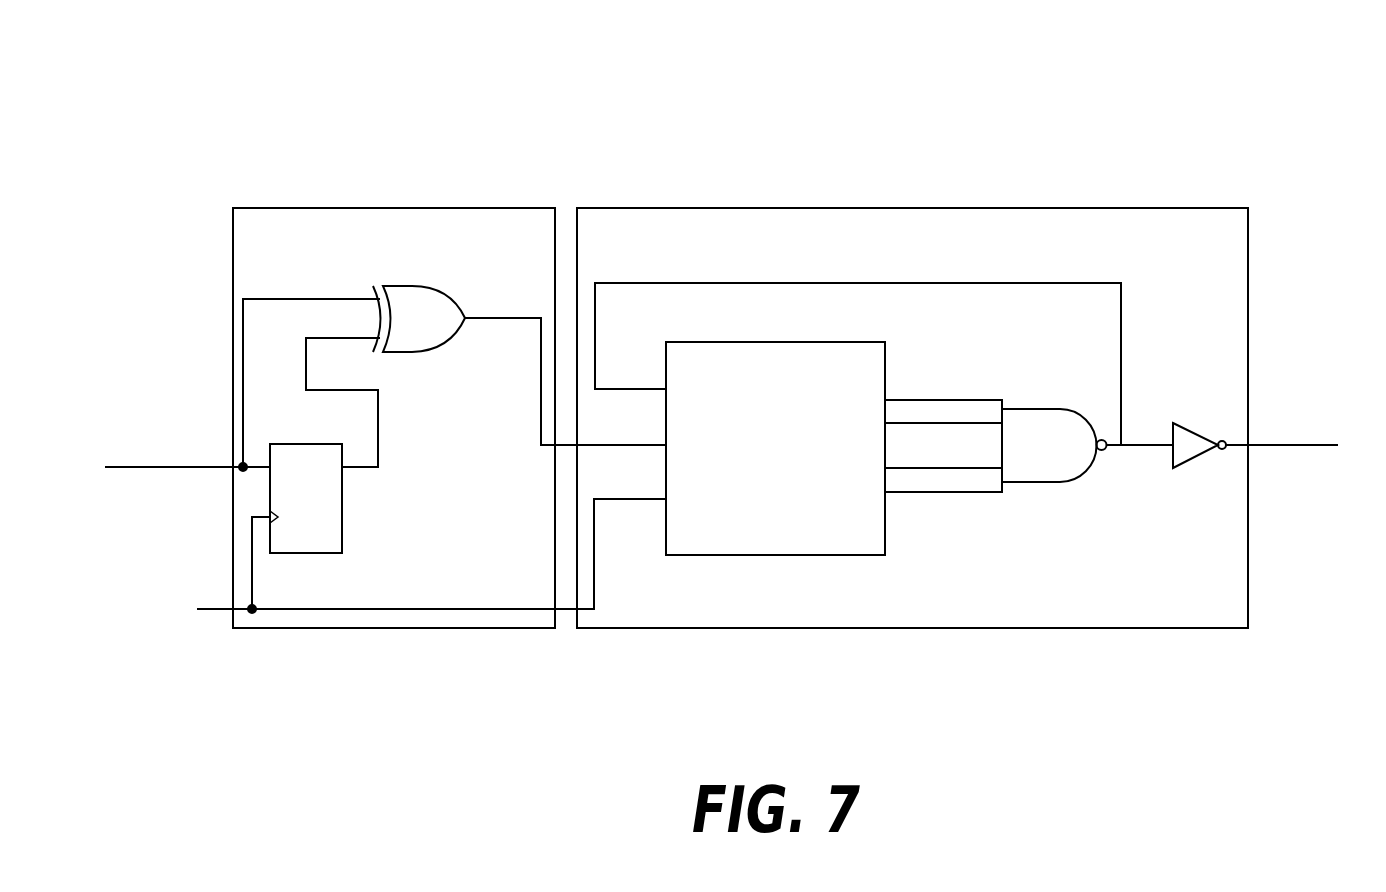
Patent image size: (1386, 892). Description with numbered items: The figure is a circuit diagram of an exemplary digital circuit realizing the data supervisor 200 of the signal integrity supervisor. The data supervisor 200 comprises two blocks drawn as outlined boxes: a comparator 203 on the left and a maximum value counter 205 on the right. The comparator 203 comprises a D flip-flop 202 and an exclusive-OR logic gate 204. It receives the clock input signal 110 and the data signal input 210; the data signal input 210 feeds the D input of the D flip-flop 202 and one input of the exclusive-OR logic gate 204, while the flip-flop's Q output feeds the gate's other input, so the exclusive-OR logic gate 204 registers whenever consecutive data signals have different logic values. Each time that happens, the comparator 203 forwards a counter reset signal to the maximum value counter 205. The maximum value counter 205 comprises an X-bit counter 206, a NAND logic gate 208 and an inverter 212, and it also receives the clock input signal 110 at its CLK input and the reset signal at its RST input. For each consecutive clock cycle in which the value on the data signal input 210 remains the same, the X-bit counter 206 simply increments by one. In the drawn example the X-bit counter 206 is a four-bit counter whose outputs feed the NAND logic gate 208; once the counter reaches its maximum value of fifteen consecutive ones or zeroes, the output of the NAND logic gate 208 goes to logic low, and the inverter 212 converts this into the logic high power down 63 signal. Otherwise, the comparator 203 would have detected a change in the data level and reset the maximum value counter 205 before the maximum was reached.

The data supervisor 200 is at (843, 119).
The comparator 203 is at (337, 207).
The exclusive-OR logic gate 204 is at (415, 280).
The D flip-flop 202 is at (344, 520).
The data signal input 210 is at (199, 470).
The clock input signal 110 is at (222, 618).
The maximum value counter 205 is at (707, 207).
The X-bit counter 206 is at (762, 341).
The NAND logic gate 208 is at (1058, 408).
The inverter 212 is at (1200, 465).
The power down signal 63 is at (1275, 447).